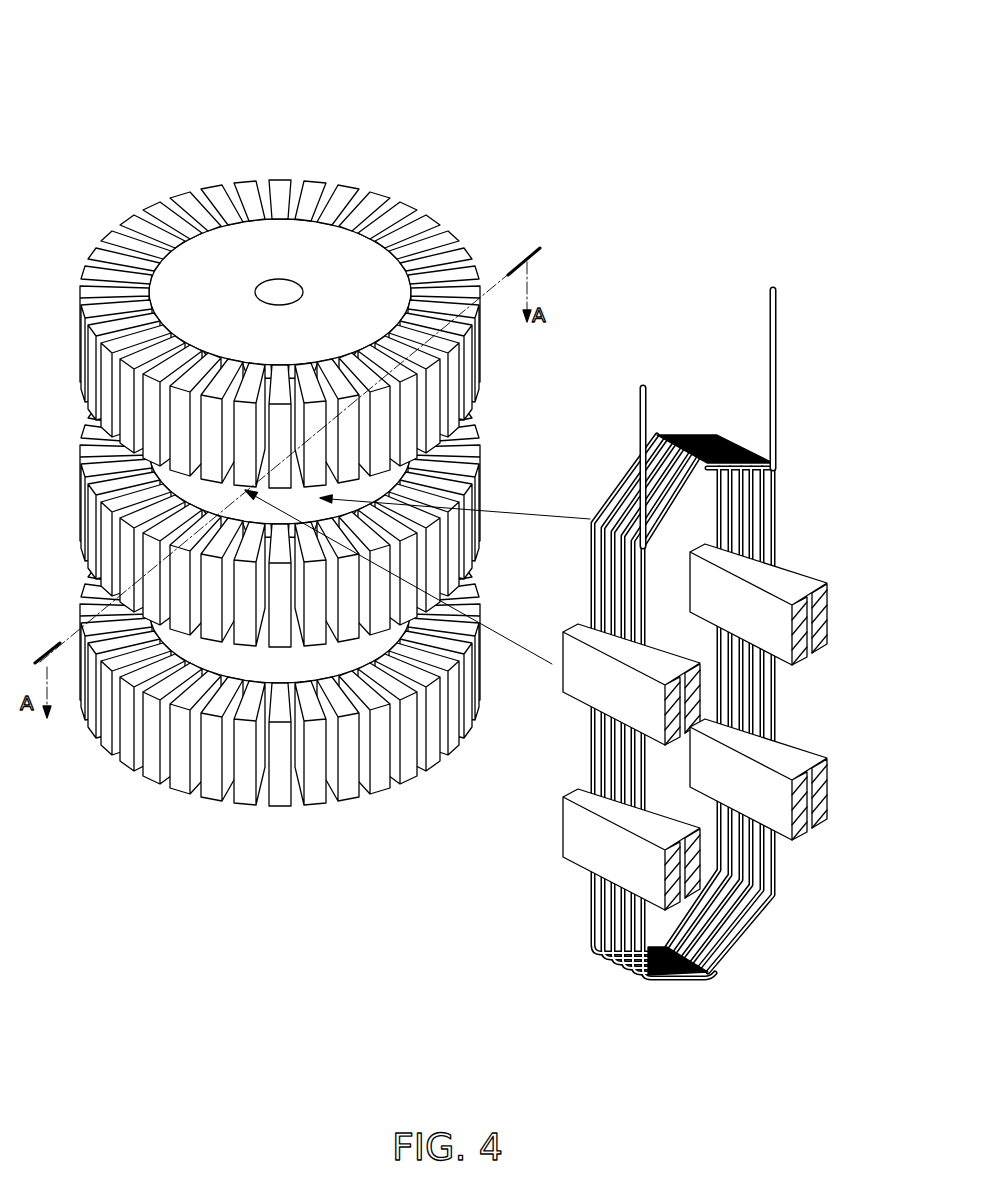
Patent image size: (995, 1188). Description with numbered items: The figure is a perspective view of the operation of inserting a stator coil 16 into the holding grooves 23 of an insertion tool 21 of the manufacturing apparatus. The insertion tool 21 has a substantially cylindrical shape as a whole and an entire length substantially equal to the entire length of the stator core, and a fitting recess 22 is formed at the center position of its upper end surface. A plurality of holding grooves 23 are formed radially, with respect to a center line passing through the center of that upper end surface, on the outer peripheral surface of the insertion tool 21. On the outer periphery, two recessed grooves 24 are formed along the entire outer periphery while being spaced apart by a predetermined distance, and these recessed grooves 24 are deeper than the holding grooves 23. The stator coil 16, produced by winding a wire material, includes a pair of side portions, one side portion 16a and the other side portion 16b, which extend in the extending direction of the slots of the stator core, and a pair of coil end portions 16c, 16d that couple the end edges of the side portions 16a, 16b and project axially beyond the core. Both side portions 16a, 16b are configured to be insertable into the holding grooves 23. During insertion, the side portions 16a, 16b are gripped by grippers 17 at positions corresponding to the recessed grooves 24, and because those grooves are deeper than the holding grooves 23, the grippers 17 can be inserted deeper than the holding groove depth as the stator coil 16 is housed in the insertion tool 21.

The insertion tool 21 is at (335, 453).
The fitting recess 22 is at (270, 293).
The holding grooves 23 is at (282, 274).
The recessed grooves 24 is at (353, 497).
The stator coil 16 is at (690, 670).
The one side portion 16a is at (590, 575).
The other side portion 16b is at (777, 518).
The coil end portion 16c is at (703, 434).
The coil end portion 16d is at (733, 950).
The grippers 17 is at (808, 574).